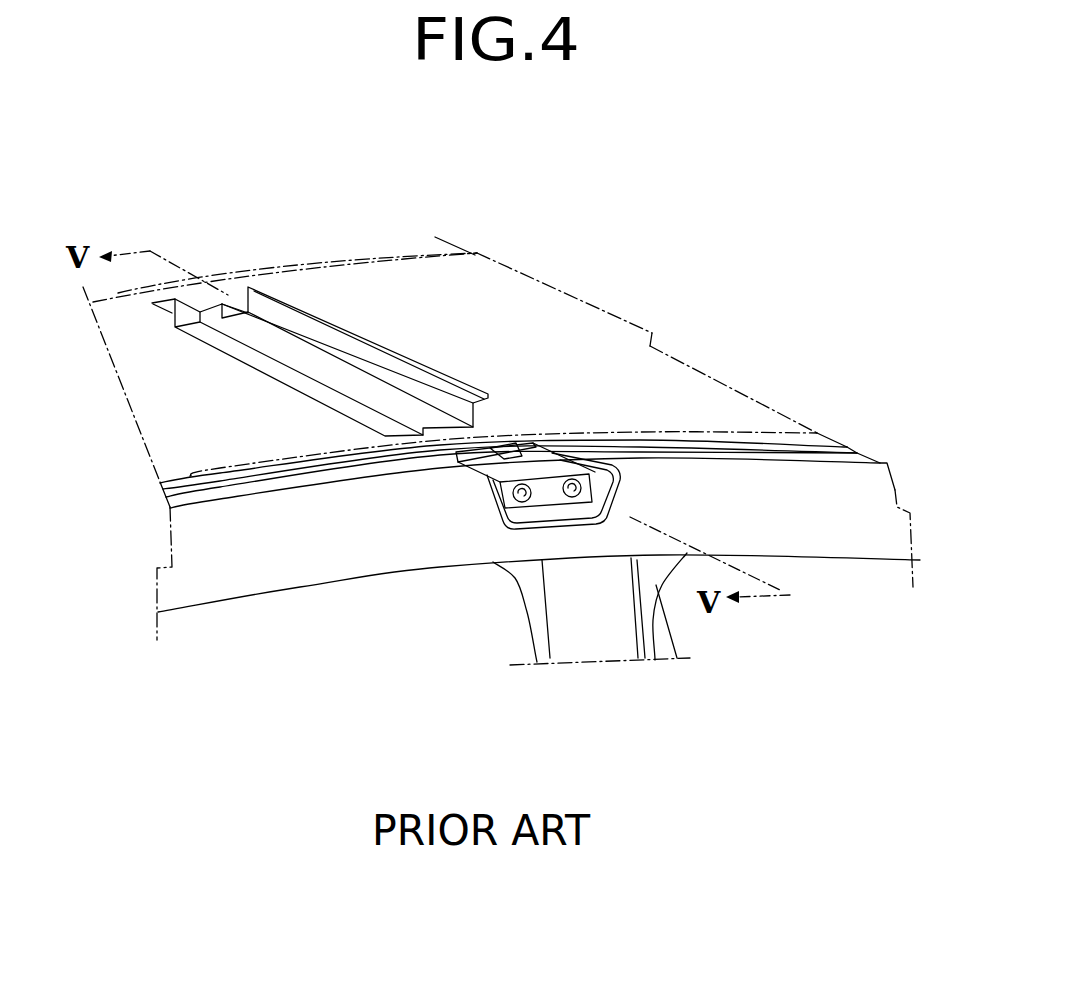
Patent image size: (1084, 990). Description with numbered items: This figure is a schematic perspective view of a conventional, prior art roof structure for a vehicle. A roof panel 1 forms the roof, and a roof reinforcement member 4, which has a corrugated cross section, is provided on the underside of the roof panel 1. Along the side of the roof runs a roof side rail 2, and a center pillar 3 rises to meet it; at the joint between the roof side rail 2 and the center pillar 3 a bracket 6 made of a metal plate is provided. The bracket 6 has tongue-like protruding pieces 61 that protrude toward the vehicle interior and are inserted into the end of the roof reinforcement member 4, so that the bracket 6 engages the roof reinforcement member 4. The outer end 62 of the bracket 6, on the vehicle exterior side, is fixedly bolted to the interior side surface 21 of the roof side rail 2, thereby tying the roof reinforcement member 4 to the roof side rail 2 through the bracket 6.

The roof panel 1 is at (290, 253).
The roof side rail 2 is at (309, 594).
The side surface of the roof side rail 21 is at (822, 546).
The center pillar 3 is at (595, 620).
The roof reinforcement member 4 is at (342, 327).
The bracket 6 is at (472, 490).
The protruding pieces 61 is at (510, 448).
The outer end of the bracket 62 is at (540, 498).